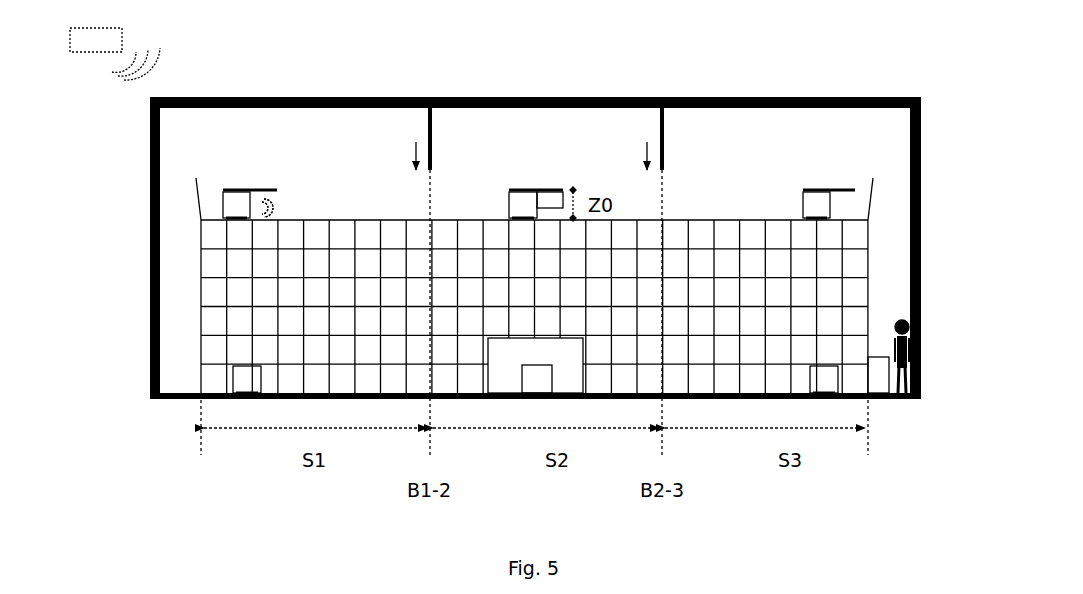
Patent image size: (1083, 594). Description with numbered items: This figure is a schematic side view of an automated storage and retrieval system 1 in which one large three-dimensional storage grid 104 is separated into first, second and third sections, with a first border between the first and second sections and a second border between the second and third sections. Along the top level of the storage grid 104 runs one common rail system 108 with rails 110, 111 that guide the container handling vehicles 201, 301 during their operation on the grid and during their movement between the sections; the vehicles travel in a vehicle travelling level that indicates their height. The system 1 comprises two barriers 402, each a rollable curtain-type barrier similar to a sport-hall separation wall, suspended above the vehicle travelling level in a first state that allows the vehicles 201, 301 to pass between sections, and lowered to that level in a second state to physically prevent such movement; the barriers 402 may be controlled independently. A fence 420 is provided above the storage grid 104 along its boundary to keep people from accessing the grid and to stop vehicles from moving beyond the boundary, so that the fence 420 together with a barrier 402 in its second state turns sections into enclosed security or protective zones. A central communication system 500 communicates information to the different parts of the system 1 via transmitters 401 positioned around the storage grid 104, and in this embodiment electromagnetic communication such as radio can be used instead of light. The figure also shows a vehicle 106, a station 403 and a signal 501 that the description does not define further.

The automated storage and retrieval system 1 is at (539, 205).
The storage grid 104 is at (118, 381).
The mobile robot with sensor 106 is at (553, 189).
The rail system 108 is at (188, 221).
The rail 110 is at (535, 205).
The rail 111 is at (716, 214).
The container handling vehicle 201 is at (326, 131).
The container handling vehicle 301 is at (242, 189).
The transmitter 401 is at (206, 91).
The barrier 402 is at (439, 139).
The charging station 403 is at (881, 351).
The fence 420 is at (874, 198).
The central communication system 500 is at (115, 54).
The wireless signal 501 is at (266, 209).